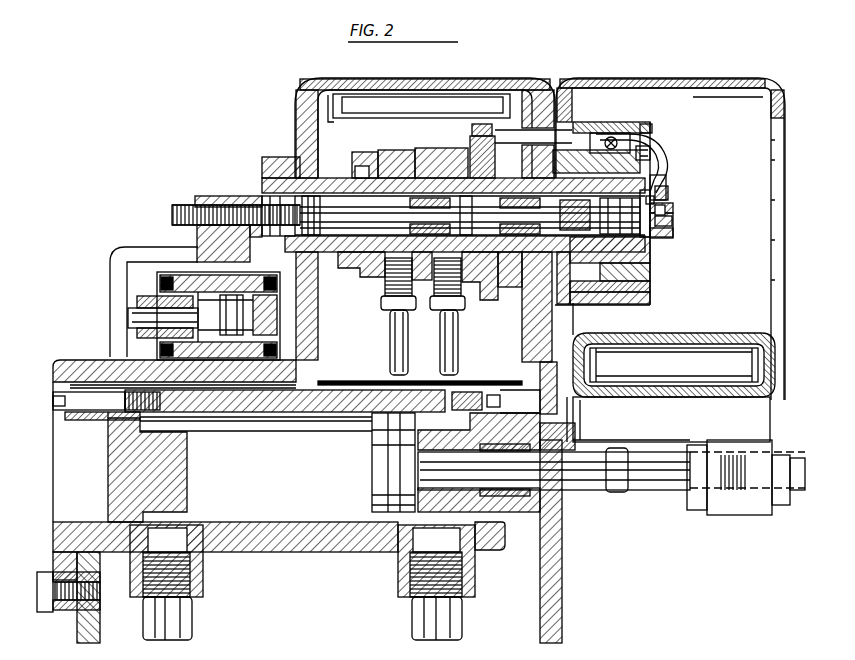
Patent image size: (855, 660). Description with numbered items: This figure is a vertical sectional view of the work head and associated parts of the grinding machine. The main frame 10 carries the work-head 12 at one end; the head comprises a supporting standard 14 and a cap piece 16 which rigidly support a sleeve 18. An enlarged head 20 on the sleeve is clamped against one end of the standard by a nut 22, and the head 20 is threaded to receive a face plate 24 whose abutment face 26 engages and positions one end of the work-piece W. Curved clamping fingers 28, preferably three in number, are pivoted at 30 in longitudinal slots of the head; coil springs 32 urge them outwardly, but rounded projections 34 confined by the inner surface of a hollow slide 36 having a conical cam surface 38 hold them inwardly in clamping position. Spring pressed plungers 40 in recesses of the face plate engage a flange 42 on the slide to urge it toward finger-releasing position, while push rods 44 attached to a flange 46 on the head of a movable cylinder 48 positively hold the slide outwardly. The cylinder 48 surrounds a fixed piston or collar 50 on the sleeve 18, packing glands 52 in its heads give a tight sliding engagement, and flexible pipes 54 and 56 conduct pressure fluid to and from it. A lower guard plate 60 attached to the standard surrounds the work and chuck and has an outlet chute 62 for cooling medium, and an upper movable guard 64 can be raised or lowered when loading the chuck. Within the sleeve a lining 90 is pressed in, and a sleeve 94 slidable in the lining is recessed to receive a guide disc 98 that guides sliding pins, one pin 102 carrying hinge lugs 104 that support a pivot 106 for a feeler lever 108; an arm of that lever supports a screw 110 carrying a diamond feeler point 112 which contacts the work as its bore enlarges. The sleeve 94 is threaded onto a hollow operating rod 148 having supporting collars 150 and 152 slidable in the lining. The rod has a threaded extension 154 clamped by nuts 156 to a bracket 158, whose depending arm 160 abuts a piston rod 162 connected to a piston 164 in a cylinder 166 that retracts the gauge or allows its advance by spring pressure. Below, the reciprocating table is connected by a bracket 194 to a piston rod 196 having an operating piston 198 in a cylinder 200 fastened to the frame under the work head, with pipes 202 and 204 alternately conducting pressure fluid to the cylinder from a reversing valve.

The main frame 10 is at (562, 568).
The work-head 12 is at (320, 70).
The supporting standard 14 is at (318, 338).
The cap piece 16 is at (292, 112).
The sleeve 18 is at (327, 178).
The enlarged head 20 is at (522, 292).
The nut 22 is at (268, 178).
The face plate 24 is at (640, 270).
The abutment face 26 is at (636, 250).
The clamping fingers 28 is at (670, 163).
The pivot 30 is at (610, 137).
The coil springs 32 is at (652, 149).
The rounded projections 34 is at (654, 130).
The hollow slide 36 is at (620, 122).
The conical cam surface 38 is at (645, 125).
The spring pressed plungers 40 is at (600, 305).
The flange 42 is at (572, 305).
The push rods 44 is at (521, 153).
The flange 46 is at (480, 124).
The movable cylinder 48 is at (438, 150).
The fixed piston or collar 50 is at (400, 152).
The packing glands 52 is at (370, 154).
The flexible pipe 54 is at (408, 345).
The flexible pipe 56 is at (460, 345).
The lower guard plate 60 is at (726, 323).
The outlet chute 62 is at (660, 388).
The upper movable guard 64 is at (723, 84).
The lining 90 is at (263, 180).
The sleeve 94 is at (520, 270).
The guide disc 98 is at (640, 286).
The sliding pin 102 is at (668, 180).
The hinge lugs 104 is at (680, 214).
The pivot 106 is at (710, 184).
The feeler lever 108 is at (674, 233).
The screw 110 is at (674, 219).
The diamond feeler point 112 is at (674, 208).
The hollow operating rod 148 is at (362, 254).
The supporting collar 150 is at (432, 265).
The supporting collar 152 is at (332, 258).
The threaded extension 154 is at (172, 214).
The nuts 156 is at (205, 196).
The bracket 158 is at (222, 196).
The depending arm 160 is at (110, 270).
The piston rod 162 is at (128, 316).
The piston 164 is at (218, 316).
The cylinder 166 is at (224, 345).
The bracket 194 is at (735, 516).
The piston rod 196 is at (612, 492).
The operating piston 198 is at (375, 460).
The cylinder 200 is at (238, 552).
The pipe 202 is at (192, 616).
The pipe 204 is at (410, 618).
The work-piece W is at (670, 191).